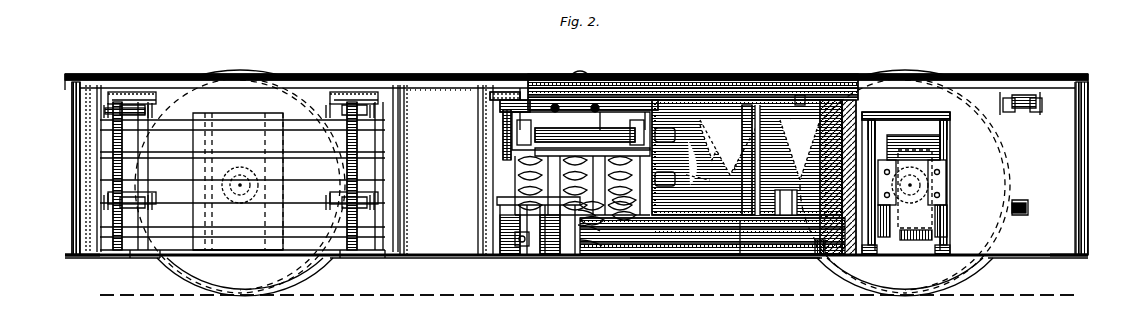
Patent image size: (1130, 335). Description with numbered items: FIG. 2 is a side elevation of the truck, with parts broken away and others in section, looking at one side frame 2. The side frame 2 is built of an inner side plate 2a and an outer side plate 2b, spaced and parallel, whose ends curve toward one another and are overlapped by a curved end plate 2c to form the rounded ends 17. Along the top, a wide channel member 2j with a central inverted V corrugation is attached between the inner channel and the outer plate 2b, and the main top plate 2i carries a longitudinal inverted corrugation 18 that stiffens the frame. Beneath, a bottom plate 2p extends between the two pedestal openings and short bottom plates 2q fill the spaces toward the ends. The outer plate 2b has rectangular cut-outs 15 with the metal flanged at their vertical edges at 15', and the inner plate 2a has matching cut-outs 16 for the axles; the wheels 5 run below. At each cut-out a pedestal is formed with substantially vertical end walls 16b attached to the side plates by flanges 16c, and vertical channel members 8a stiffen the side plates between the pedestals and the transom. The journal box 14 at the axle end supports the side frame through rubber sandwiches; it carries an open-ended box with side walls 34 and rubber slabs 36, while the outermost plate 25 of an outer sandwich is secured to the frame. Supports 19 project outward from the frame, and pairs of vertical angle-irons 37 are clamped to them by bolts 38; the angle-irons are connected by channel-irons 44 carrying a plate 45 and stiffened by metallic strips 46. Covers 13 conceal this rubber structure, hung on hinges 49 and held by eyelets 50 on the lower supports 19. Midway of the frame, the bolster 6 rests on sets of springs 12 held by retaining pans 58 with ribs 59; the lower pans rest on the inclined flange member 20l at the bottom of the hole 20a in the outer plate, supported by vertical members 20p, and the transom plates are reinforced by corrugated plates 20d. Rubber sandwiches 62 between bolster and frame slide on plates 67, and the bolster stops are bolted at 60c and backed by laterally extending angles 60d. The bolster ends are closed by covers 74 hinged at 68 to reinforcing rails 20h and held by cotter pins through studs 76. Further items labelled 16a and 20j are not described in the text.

The side frame 2 is at (437, 95).
The inner side plate 2a is at (705, 108).
The outer side plate 2b is at (458, 100).
The curved end plate 2c is at (1096, 134).
The main top plate 2i is at (500, 95).
The channel member 2j is at (762, 95).
The bottom plate 2p is at (712, 255).
The short bottom plate 2q is at (1058, 298).
The wheel 5 is at (318, 270).
The bolster 6 is at (610, 125).
The vertical channel member 8a is at (745, 245).
The springs 12 is at (595, 230).
The cover 13 is at (95, 222).
The journal box 14 is at (905, 180).
The cut out portion 15 is at (543, 150).
The flanged edge 15' is at (248, 261).
The cut out portion 16 is at (212, 255).
The side frame bracket 16a is at (808, 185).
The end wall 16b is at (838, 270).
The flange 16c is at (820, 258).
The rounded end 17 is at (73, 193).
The corrugation 18 is at (818, 160).
The support 19 is at (128, 92).
The rectangular hole 20a is at (500, 112).
The corrugated plate 20d is at (715, 162).
The reinforcing rail 20h is at (498, 203).
The housing part 20j is at (730, 147).
The inclined flange member 20l is at (702, 240).
The vertical member 20p is at (545, 255).
The metal plate 25 is at (905, 215).
The side wall 34 is at (942, 138).
The rubber slab 36 is at (945, 186).
The angle-iron 37 is at (110, 137).
The bolt 38 is at (340, 105).
The channel-iron 44 is at (305, 120).
The plate 45 is at (205, 200).
The metallic strip 46 is at (232, 240).
The hinge 49 is at (160, 100).
The eyelet 50 is at (385, 201).
The retaining pan 58 is at (655, 245).
The rib 59 is at (520, 175).
The bolt 60c is at (595, 108).
The angle 60d is at (560, 110).
The rubber sandwich 62 is at (515, 150).
The plate 67 is at (505, 137).
The hinge 68 is at (520, 90).
The cover plate 74 is at (478, 230).
The stud 76 is at (520, 250).